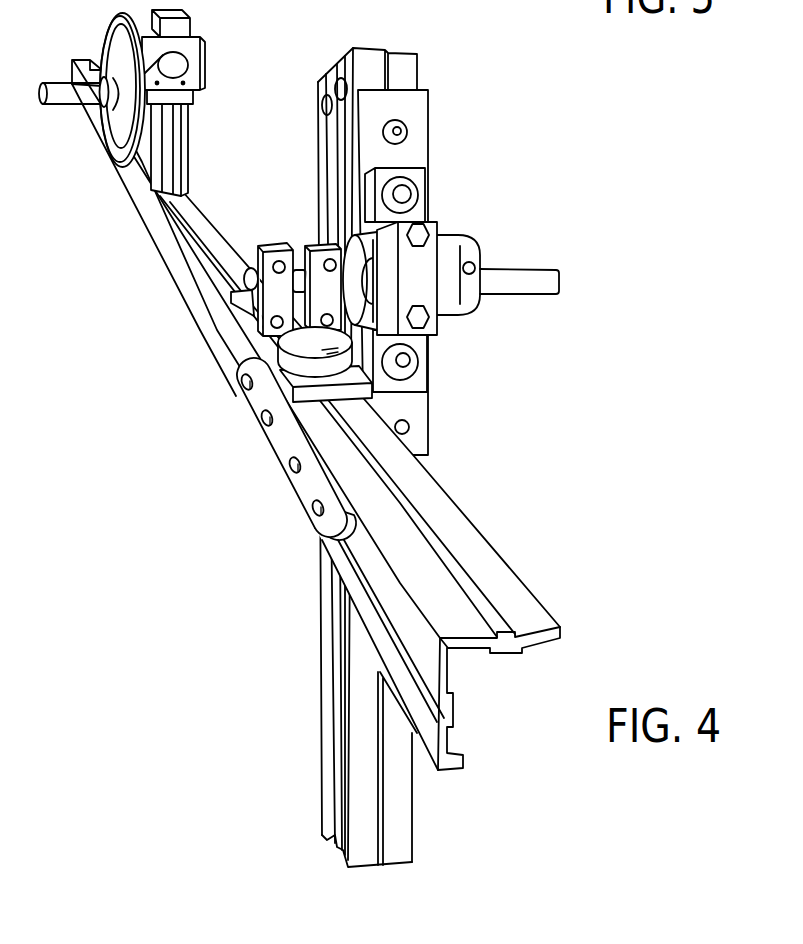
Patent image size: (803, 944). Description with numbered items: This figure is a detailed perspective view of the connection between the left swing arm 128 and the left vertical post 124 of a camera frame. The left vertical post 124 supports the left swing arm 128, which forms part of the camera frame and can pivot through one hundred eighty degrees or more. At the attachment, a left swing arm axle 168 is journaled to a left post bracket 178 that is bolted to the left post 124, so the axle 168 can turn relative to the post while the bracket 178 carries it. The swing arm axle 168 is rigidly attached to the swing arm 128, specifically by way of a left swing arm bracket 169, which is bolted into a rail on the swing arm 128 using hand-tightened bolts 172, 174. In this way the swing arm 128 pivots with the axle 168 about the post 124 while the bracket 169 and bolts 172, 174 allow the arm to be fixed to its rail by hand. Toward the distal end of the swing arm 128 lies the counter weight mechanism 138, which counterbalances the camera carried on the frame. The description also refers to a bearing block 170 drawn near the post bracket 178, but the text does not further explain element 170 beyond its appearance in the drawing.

The left vertical post 124 is at (322, 760).
The left swing arm 128 is at (494, 549).
The counter weight mechanism 138 is at (230, 45).
The left swing arm axle 168 is at (558, 286).
The left swing arm bracket 169 is at (257, 335).
The bearing block 170 is at (422, 202).
The hand-tightened bolt 172 is at (244, 302).
The hand-tightened bolt 174 is at (297, 360).
The left post bracket 178 is at (440, 331).